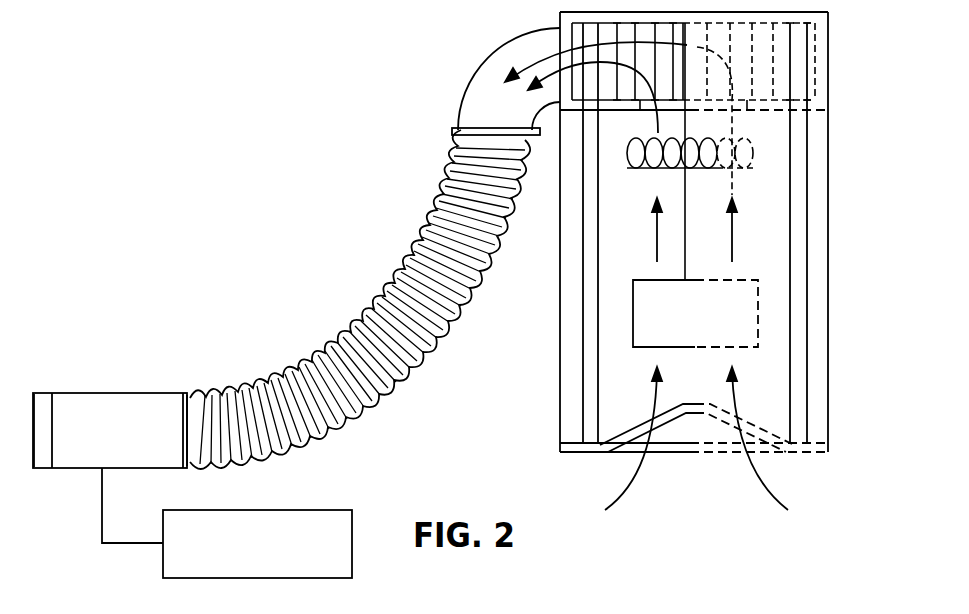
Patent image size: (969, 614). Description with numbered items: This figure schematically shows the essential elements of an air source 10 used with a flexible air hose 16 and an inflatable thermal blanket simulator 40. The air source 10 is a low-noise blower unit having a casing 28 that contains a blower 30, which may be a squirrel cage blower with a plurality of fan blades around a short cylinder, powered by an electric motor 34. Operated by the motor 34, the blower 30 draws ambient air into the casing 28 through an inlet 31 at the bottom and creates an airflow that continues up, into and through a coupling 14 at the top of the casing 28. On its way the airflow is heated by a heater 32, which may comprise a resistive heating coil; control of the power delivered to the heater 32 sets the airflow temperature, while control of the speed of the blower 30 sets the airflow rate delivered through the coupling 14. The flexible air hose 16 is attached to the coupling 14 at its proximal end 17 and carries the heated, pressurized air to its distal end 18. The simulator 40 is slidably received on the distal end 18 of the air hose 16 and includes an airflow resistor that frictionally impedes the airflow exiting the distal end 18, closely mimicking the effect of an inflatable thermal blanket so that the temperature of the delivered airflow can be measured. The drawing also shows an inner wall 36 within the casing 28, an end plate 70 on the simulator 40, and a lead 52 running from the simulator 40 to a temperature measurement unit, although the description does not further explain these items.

The air source 10 is at (535, 375).
The coupling 14 is at (493, 52).
The flexible air hose 16 is at (395, 303).
The proximal end 17 is at (460, 143).
The distal end 18 is at (193, 393).
The casing 28 is at (830, 373).
The blower 30 is at (810, 57).
The inlet 31 is at (757, 443).
The heater 32 is at (773, 137).
The electric motor 34 is at (758, 300).
The inner wall 36 is at (805, 265).
The simulator 40 is at (120, 393).
The temperature sensor lead 52 is at (102, 468).
The end plate 70 is at (42, 393).